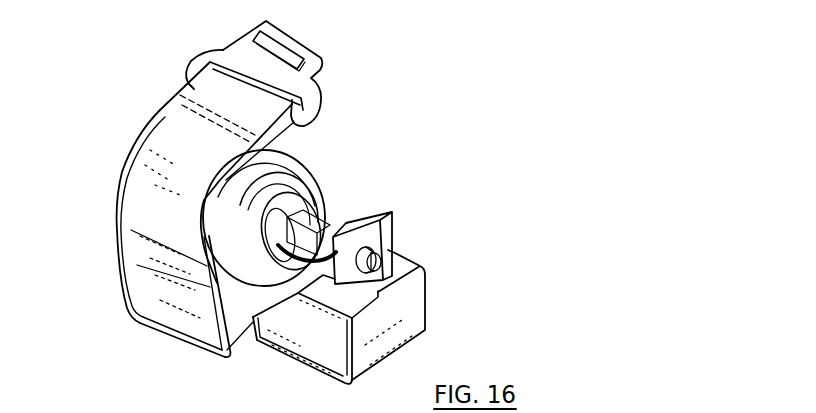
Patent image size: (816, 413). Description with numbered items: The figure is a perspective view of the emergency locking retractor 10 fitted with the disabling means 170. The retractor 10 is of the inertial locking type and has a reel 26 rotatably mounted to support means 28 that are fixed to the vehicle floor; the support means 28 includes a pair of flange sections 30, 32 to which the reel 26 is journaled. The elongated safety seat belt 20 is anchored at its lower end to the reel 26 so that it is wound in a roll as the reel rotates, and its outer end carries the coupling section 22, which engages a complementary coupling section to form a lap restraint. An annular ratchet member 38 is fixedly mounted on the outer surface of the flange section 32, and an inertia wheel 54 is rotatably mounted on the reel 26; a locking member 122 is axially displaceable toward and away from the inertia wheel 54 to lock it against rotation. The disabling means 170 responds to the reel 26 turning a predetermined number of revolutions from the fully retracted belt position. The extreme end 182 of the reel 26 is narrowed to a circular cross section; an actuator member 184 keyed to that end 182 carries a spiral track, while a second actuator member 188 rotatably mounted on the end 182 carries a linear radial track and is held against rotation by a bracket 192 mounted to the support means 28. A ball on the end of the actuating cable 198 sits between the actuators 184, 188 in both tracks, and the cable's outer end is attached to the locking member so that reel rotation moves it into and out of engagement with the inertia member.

The emergency locking retractor 10 is at (334, 98).
The safety seat belt 20 is at (156, 118).
The coupling section 22 is at (314, 25).
The reel 26 is at (10, 407).
The support means 28 is at (152, 245).
The flange section 30 is at (117, 270).
The flange section 32 is at (203, 350).
The annular ratchet member 38 is at (303, 163).
The inertia wheel 54 is at (300, 182).
The locking member 122 is at (308, 205).
The disabling means 170 is at (440, 217).
The extreme end of the reel 182 is at (386, 262).
The actuator member 184 is at (372, 213).
The second actuator member 188 is at (390, 233).
The bracket 192 is at (417, 312).
The actuating cable 198 is at (352, 216).